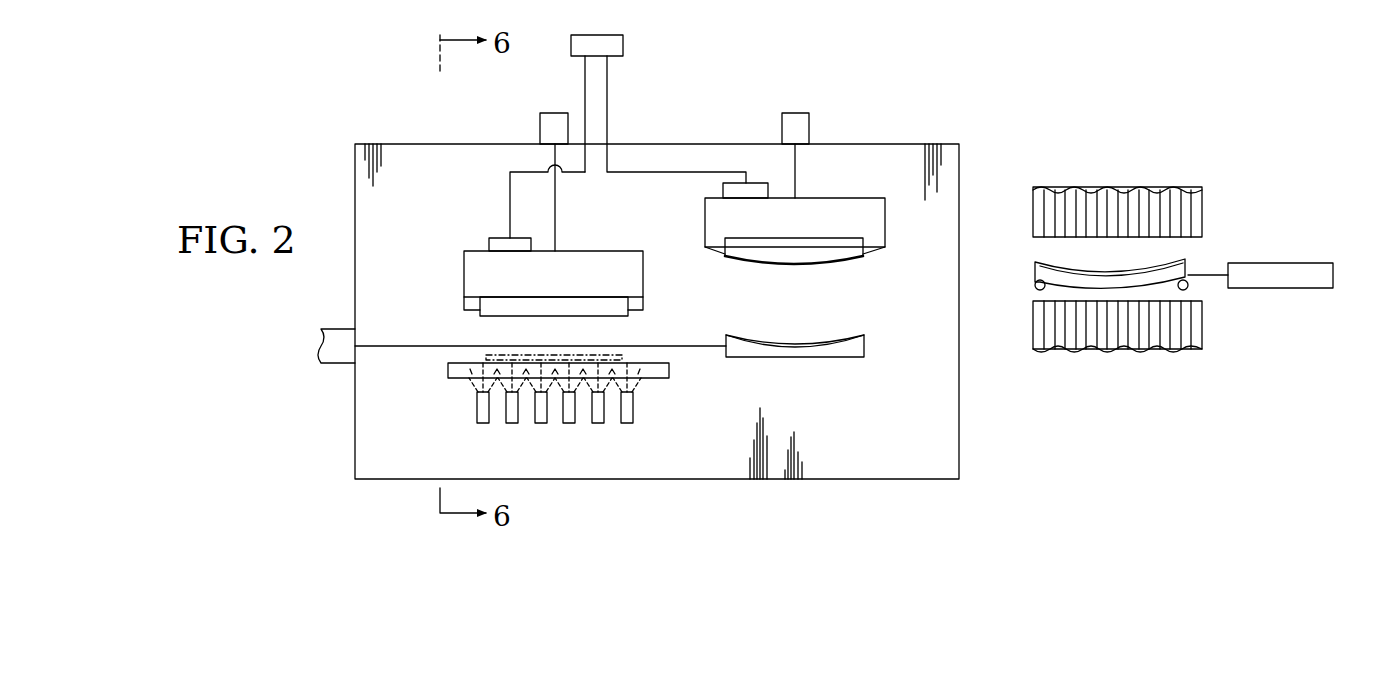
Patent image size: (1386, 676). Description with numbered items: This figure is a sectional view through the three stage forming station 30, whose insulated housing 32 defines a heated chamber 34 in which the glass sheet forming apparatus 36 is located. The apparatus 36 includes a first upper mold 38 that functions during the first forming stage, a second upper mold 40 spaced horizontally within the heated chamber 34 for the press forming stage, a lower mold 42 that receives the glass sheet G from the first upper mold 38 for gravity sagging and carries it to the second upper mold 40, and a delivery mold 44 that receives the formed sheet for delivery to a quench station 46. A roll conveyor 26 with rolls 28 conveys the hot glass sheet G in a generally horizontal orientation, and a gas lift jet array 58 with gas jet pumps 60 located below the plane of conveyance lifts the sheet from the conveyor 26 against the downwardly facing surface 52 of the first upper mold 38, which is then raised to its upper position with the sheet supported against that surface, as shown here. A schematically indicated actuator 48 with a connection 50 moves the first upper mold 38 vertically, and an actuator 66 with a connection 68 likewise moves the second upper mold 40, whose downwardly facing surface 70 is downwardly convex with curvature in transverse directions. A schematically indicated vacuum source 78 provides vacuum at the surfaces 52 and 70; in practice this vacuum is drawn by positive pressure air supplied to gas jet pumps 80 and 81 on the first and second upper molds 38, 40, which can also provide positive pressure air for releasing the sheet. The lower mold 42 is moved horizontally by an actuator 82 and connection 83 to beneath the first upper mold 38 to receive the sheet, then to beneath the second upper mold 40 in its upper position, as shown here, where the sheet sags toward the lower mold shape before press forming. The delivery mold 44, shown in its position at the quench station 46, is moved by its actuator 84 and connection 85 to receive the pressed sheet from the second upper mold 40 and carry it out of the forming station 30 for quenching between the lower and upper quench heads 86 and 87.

The conveyor 26 is at (649, 395).
The rolls 28 is at (449, 378).
The three stage forming station 30 is at (455, 110).
The insulated housing 32 is at (706, 142).
The heated chamber 34 is at (768, 155).
The forming apparatus 36 is at (416, 156).
The first upper mold 38 is at (462, 272).
The second upper mold 40 is at (700, 218).
The lower mold 42 is at (735, 360).
The delivery mold 44 is at (1196, 287).
The quench station 46 is at (1184, 157).
The actuator 48 is at (553, 113).
The connection 50 is at (553, 155).
The downwardly facing surface 52 is at (478, 312).
The gas lift jet array 58 is at (470, 404).
The gas jet pumps 60 is at (541, 423).
The actuator 66 is at (809, 128).
The connection 68 is at (795, 175).
The downwardly facing surface 70 is at (866, 256).
The vacuum source 78 is at (623, 46).
The gas jet pump 80 is at (505, 238).
The gas jet pump 81 is at (757, 183).
The actuator 82 is at (341, 365).
The connection 83 is at (405, 346).
The actuator 84 is at (1283, 263).
The connection 85 is at (1208, 273).
The lower quench head 86 is at (1203, 337).
The upper quench head 87 is at (1205, 210).
The glass sheet G is at (553, 310).